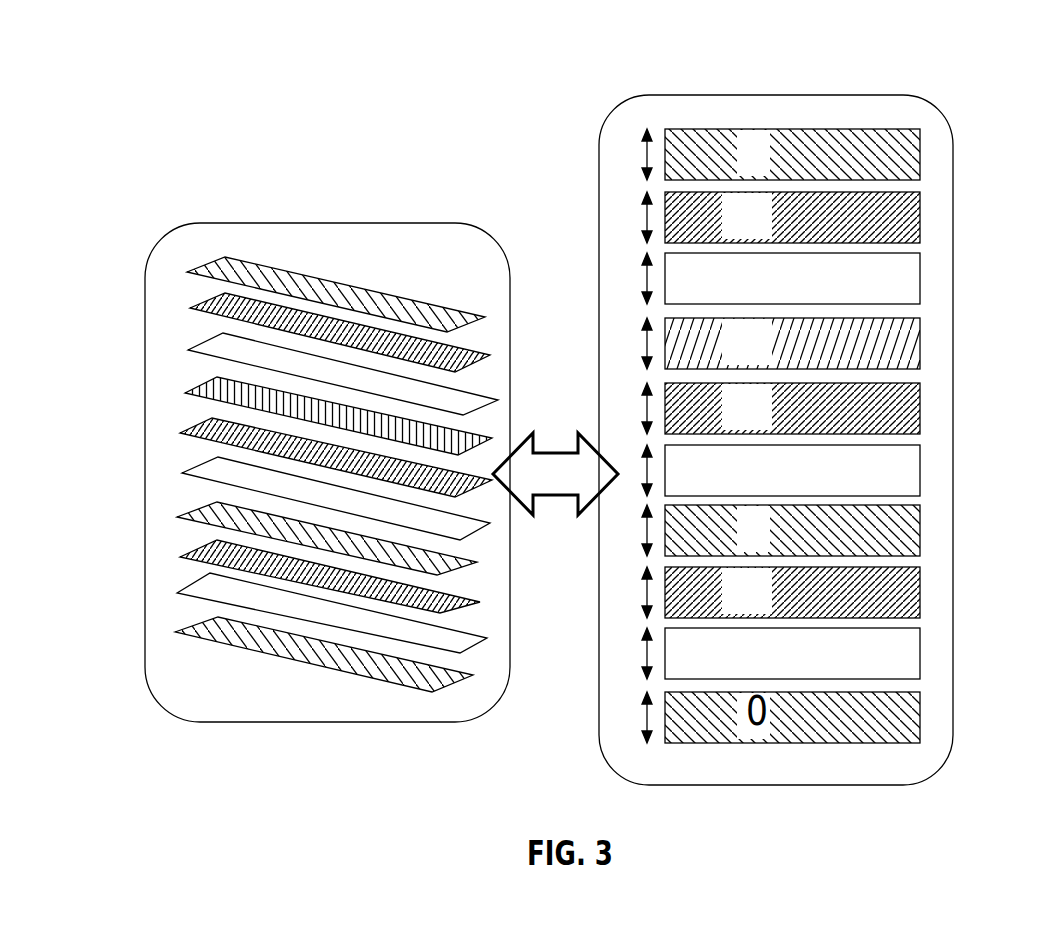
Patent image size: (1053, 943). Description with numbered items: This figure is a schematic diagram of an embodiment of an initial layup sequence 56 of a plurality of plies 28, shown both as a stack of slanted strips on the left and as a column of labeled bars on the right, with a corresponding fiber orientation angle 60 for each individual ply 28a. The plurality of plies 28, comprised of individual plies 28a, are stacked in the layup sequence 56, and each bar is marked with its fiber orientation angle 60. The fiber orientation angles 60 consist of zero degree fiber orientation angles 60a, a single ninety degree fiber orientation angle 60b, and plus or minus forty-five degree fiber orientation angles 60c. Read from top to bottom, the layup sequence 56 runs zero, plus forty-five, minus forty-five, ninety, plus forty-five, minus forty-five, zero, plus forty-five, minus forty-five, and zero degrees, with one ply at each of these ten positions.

The layup sequence 56 is at (295, 212).
The plurality of plies 28 is at (185, 335).
The individual ply 28a is at (185, 473).
The fiber orientation angle 60 is at (923, 528).
The zero degree fiber orientation angle 60a is at (767, 135).
The ninety degree fiber orientation angle 60b is at (773, 337).
The plus or minus forty-five degree fiber orientation angle 60c is at (773, 407).